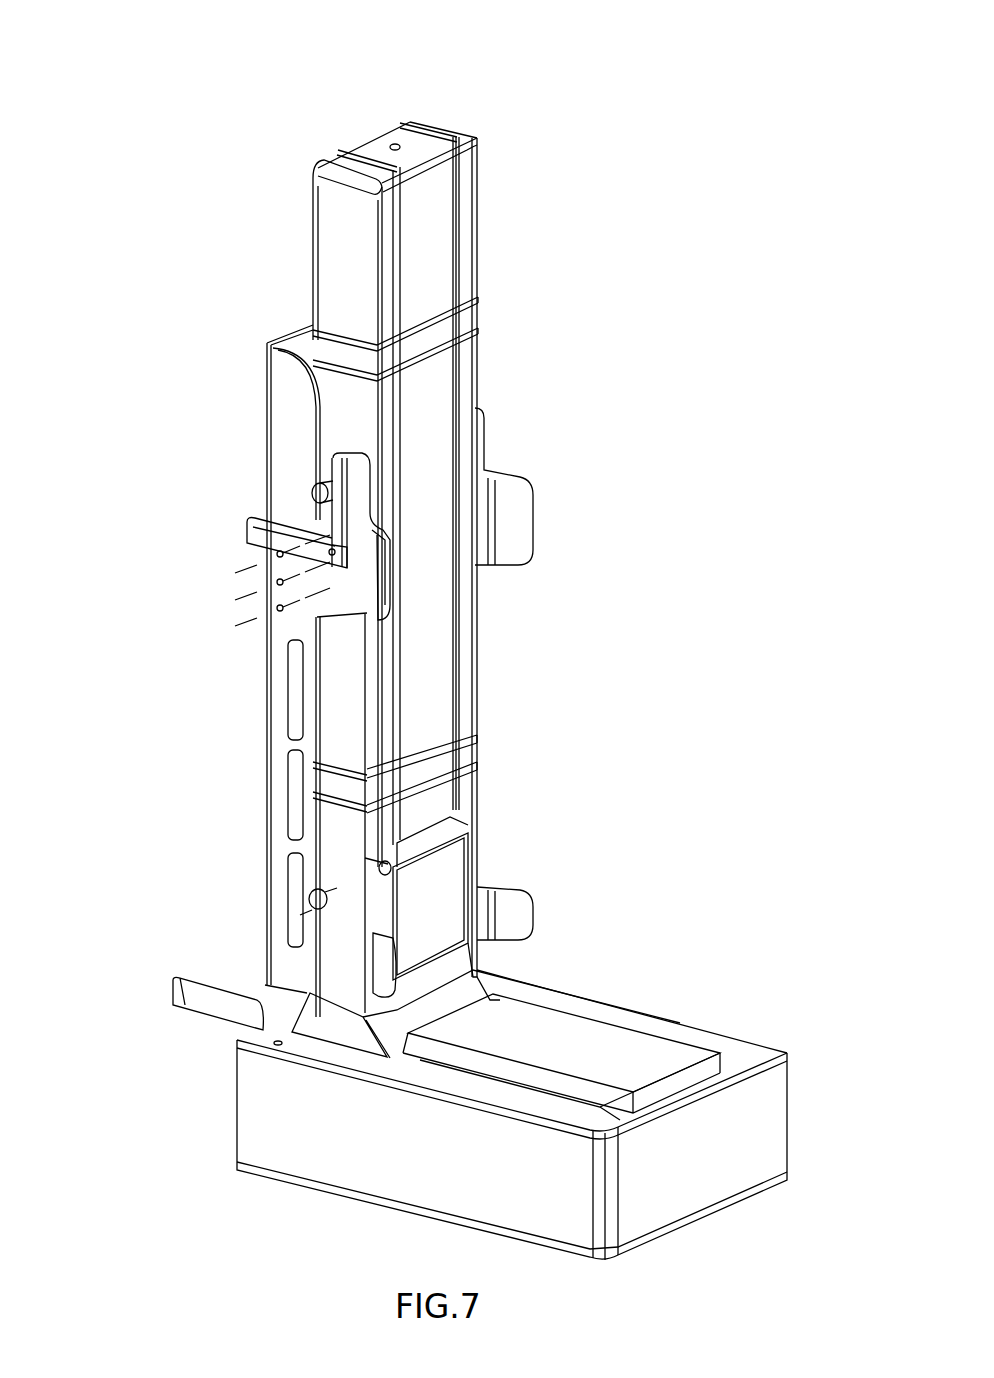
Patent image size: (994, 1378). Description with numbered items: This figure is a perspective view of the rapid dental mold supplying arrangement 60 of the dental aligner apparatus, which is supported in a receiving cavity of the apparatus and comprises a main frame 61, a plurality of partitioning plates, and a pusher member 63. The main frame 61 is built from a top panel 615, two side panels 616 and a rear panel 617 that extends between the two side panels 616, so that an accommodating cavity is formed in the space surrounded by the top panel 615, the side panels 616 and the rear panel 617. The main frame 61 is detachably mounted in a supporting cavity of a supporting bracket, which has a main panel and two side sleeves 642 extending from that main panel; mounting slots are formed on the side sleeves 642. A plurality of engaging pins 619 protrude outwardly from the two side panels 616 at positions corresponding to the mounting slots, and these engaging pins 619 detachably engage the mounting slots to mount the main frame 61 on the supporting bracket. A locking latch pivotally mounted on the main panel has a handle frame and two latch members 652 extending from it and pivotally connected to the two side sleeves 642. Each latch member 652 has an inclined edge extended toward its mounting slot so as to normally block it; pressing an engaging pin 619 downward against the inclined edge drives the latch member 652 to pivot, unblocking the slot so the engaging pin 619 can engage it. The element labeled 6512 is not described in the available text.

The rapid dental mold supplying arrangement 60 is at (553, 130).
The top panel 615 is at (410, 143).
The side panels 616 is at (333, 240).
The fastening straps 6512 is at (332, 465).
The main frame 61 is at (430, 437).
The side sleeves 642 is at (297, 418).
The engaging pins 619 is at (332, 530).
The latch members 652 is at (332, 551).
The rear panel 617 is at (430, 648).
The pusher member 63 is at (588, 1047).